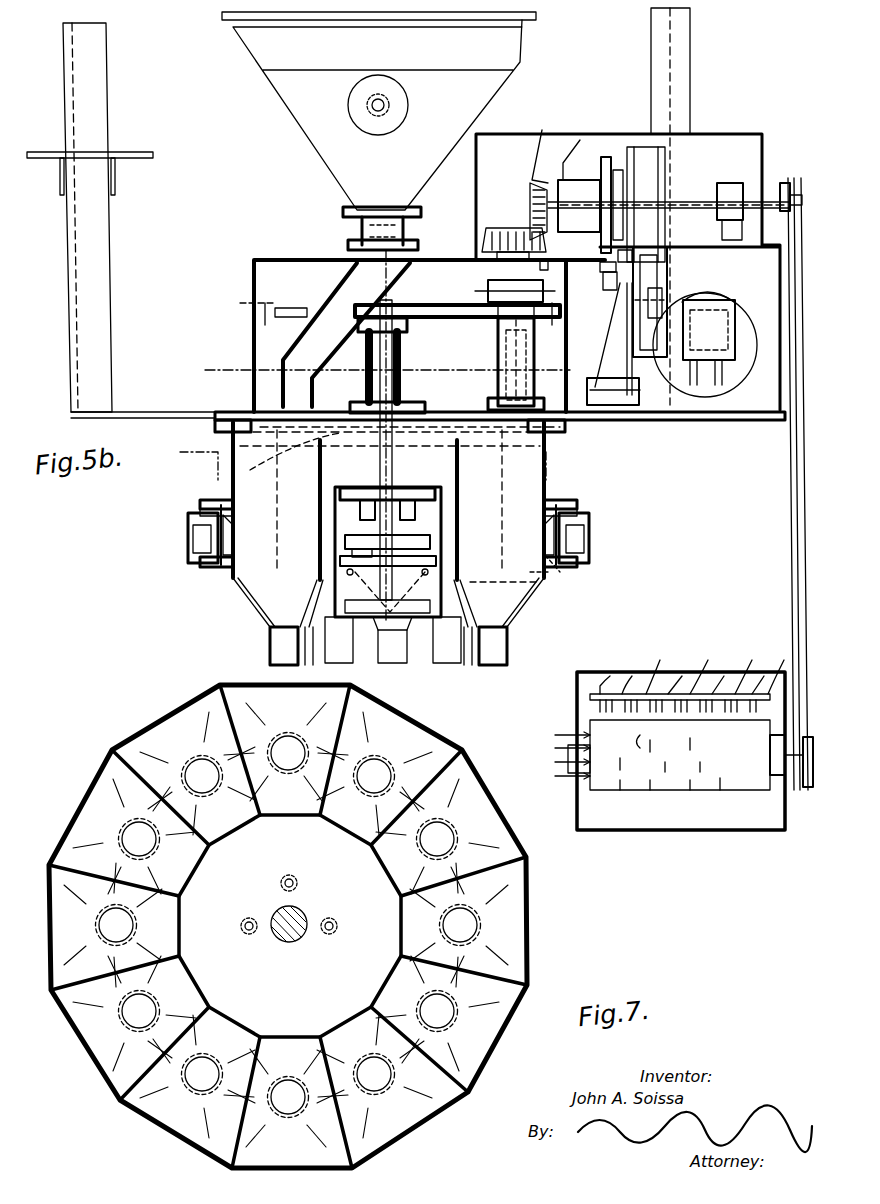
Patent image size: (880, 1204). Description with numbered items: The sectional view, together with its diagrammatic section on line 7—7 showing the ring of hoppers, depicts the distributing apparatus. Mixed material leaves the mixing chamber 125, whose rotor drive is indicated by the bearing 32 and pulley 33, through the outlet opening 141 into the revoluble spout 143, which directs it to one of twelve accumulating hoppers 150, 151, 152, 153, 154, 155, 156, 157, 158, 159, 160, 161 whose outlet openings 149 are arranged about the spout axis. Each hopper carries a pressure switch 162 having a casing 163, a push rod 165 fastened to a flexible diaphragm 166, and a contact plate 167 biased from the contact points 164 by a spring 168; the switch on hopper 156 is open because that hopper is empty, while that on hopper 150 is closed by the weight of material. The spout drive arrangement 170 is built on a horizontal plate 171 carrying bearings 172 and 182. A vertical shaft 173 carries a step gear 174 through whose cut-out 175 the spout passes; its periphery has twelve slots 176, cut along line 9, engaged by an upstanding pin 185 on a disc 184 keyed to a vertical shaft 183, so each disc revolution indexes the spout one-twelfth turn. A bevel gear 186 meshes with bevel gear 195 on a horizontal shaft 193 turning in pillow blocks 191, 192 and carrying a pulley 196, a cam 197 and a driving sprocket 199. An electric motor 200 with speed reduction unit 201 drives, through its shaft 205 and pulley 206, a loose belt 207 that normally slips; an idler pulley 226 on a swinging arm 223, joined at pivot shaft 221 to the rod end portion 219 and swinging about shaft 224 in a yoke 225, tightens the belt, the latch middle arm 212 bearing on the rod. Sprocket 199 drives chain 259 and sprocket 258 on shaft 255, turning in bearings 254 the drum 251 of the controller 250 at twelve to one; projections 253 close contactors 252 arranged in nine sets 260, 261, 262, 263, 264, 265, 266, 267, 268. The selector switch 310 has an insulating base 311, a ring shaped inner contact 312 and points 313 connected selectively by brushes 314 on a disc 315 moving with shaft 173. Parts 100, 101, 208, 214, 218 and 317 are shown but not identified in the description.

In FIG. 5B, the section line 7 is at (372, 475).
In FIG. 5B, the section line 9 is at (428, 361).
In FIG. 5B, the bearing 32 is at (390, 105).
In FIG. 5B, the pulley 33 is at (404, 92).
In FIG. 5B, the support post 100 is at (76, 250).
In FIG. 5B, the upright column 101 is at (66, 42).
In FIG. 5B, the mixing chamber 125 is at (522, 45).
In FIG. 5B, the outlet opening 141 is at (412, 215).
In FIG. 5B, the revoluble spout 143 is at (258, 355).
In FIG. 5B, the outlet openings 149 is at (270, 647).
In FIG. 7, the outlet openings 149 is at (465, 940).
In FIG. 5B, the accumulating hopper 150 is at (243, 574).
In FIG. 7, the accumulating hopper 150 is at (62, 1005).
In FIG. 5B, the accumulating hopper 151 is at (262, 590).
In FIG. 7, the accumulating hopper 151 is at (96, 800).
In FIG. 5B, the accumulating hopper 152 is at (280, 617).
In FIG. 7, the accumulating hopper 152 is at (177, 714).
In FIG. 5B, the accumulating hopper 153 is at (397, 650).
In FIG. 7, the accumulating hopper 153 is at (249, 690).
In FIG. 5B, the accumulating hopper 154 is at (505, 626).
In FIG. 7, the accumulating hopper 154 is at (420, 716).
In FIG. 5B, the accumulating hopper 155 is at (512, 606).
In FIG. 7, the accumulating hopper 155 is at (483, 797).
In FIG. 5B, the accumulating hopper 156 is at (548, 573).
In FIG. 7, the accumulating hopper 156 is at (528, 920).
In FIG. 7, the accumulating hopper 157 is at (504, 1023).
In FIG. 5B, the accumulating hopper 158 is at (520, 590).
In FIG. 7, the accumulating hopper 158 is at (398, 1141).
In FIG. 7, the accumulating hopper 159 is at (290, 1168).
In FIG. 7, the accumulating hopper 160 is at (150, 1126).
In FIG. 7, the accumulating hopper 161 is at (85, 1060).
In FIG. 5B, the pressure switch 162 is at (200, 560).
In FIG. 5B, the casing 163 is at (203, 505).
In FIG. 5B, the contact points 164 is at (210, 501).
In FIG. 5B, the push rod 165 is at (193, 540).
In FIG. 5B, the flexible diaphragm 166 is at (210, 578).
In FIG. 5B, the contact plate 167 is at (232, 514).
In FIG. 5B, the spring 168 is at (190, 520).
In FIG. 5B, the spout drive arrangement 170 is at (760, 408).
In FIG. 5B, the horizontal plate 171 is at (570, 426).
In FIG. 5B, the bearing 172 is at (405, 353).
In FIG. 5B, the vertical shaft 173 is at (395, 340).
In FIG. 7, the vertical shaft 173 is at (307, 918).
In FIG. 5B, the step gear 174 is at (400, 300).
In FIG. 5B, the cut-out 175 is at (338, 287).
In FIG. 5B, the slots 176 is at (298, 308).
In FIG. 5B, the bearing 182 is at (498, 392).
In FIG. 5B, the vertical shaft 183 is at (506, 378).
In FIG. 5B, the disc 184 is at (536, 300).
In FIG. 5B, the upstanding pin 185 is at (486, 296).
In FIG. 5B, the bevel gear 186 is at (488, 236).
In FIG. 5B, the pillow block 191 is at (571, 180).
In FIG. 5B, the pillow block 192 is at (785, 183).
In FIG. 5B, the horizontal shaft 193 is at (703, 198).
In FIG. 5B, the bevel gear 195 is at (538, 182).
In FIG. 5B, the pulley 196 is at (632, 147).
In FIG. 5B, the cam 197 is at (600, 264).
In FIG. 5B, the driving sprocket 199 is at (796, 195).
In FIG. 5B, the electric motor 200 is at (748, 340).
In FIG. 5B, the speed reduction unit 201 is at (735, 308).
In FIG. 5B, the shaft 205 is at (709, 330).
In FIG. 5B, the pulley 206 is at (695, 360).
In FIG. 5B, the loose belt 207 is at (655, 147).
In FIG. 5B, the arc guide 208 is at (708, 293).
In FIG. 5B, the middle arm 212 is at (632, 255).
In FIG. 5B, the stud 214 is at (548, 268).
In FIG. 5B, the bracket 218 is at (606, 157).
In FIG. 5B, the rod end portion 219 is at (606, 276).
In FIG. 5B, the pivot shaft 221 is at (668, 270).
In FIG. 5B, the swinging arm 223 is at (620, 318).
In FIG. 5B, the shaft 224 is at (608, 418).
In FIG. 5B, the yoke 225 is at (610, 412).
In FIG. 5B, the idler pulley 226 is at (668, 258).
In FIG. 5B, the controller 250 is at (655, 831).
In FIG. 5B, the drum 251 is at (670, 780).
In FIG. 5B, the contactors 252 is at (588, 712).
In FIG. 5B, the projections 253 is at (670, 762).
In FIG. 5B, the bearings 254 is at (772, 778).
In FIG. 5B, the shaft 255 is at (578, 775).
In FIG. 5B, the sprocket 258 is at (806, 790).
In FIG. 5B, the chain 259 is at (793, 595).
In FIG. 5B, the contactor set 260 is at (592, 675).
In FIG. 5B, the contactor set 261 is at (625, 675).
In FIG. 5B, the contactor set 262 is at (653, 667).
In FIG. 5B, the contactor set 263 is at (683, 675).
In FIG. 5B, the contactor set 264 is at (703, 667).
In FIG. 5B, the contactor set 265 is at (719, 675).
In FIG. 5B, the contactor set 266 is at (748, 667).
In FIG. 5B, the contactor set 267 is at (761, 675).
In FIG. 5B, the contactor set 268 is at (781, 666).
In FIG. 5B, the selector switch 310 is at (443, 549).
In FIG. 5B, the base 311 is at (368, 584).
In FIG. 5B, the ring shaped inner contact 312 is at (378, 570).
In FIG. 5B, the points 313 is at (340, 566).
In FIG. 5B, the brushes 314 is at (345, 542).
In FIG. 5B, the disc 315 is at (432, 515).
In FIG. 5B, the spacer 317 is at (352, 555).